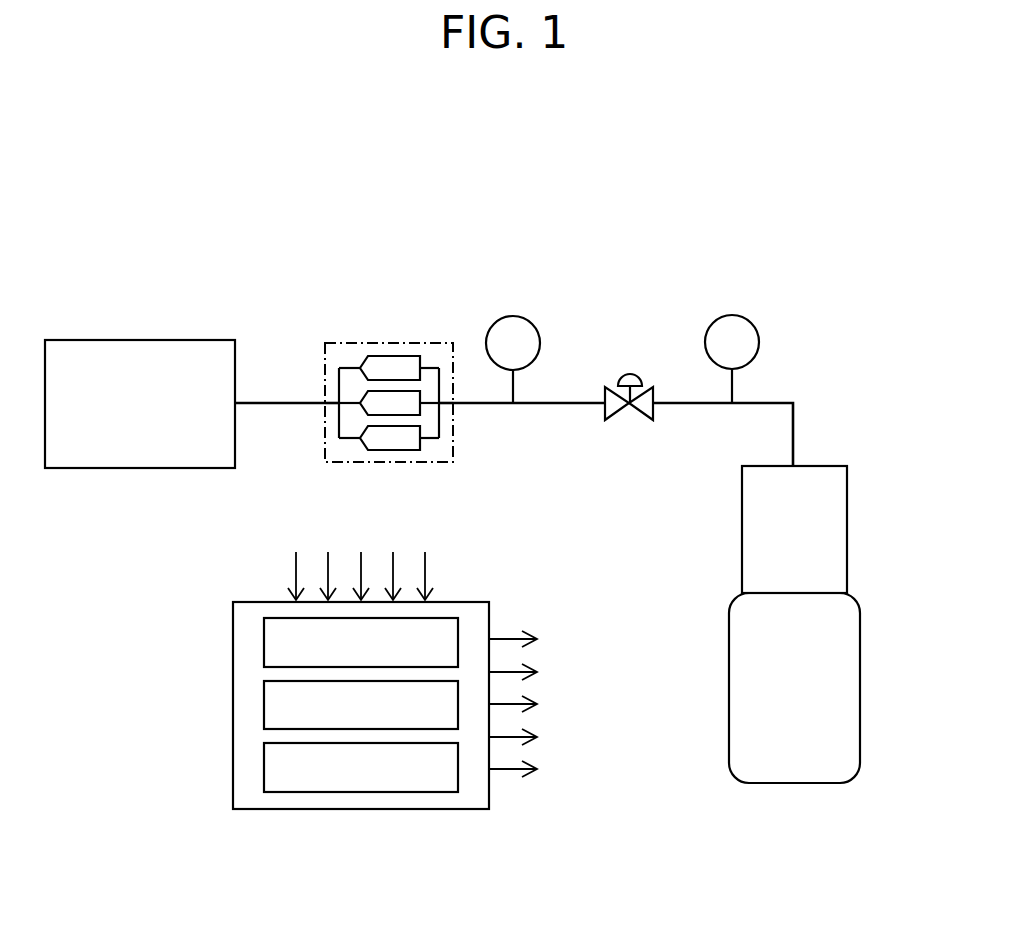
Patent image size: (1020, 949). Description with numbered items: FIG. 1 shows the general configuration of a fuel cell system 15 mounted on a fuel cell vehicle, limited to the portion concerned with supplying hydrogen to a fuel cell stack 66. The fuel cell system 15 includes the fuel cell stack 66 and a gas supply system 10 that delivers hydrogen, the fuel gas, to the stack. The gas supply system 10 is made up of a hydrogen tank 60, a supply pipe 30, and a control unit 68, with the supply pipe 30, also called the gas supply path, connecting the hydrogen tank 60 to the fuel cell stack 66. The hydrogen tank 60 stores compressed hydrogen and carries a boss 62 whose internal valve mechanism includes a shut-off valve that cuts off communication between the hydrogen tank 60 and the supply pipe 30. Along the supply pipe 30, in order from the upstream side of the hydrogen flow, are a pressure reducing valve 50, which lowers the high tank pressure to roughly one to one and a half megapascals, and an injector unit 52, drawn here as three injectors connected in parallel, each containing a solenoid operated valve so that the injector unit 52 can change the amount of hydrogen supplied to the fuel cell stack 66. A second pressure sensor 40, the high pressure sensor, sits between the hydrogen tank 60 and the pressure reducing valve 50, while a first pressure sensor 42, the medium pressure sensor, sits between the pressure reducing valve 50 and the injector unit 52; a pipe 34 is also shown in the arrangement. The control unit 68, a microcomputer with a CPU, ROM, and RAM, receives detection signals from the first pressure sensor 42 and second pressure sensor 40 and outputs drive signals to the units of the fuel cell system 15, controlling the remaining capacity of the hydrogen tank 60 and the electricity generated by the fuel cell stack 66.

The gas supply system 10 is at (800, 308).
The fuel cell system 15 is at (822, 168).
The supply pipe 30 is at (795, 432).
The pipe 34 is at (292, 405).
The second pressure sensor 40 is at (732, 315).
The first pressure sensor 42 is at (513, 316).
The pressure reducing valve 50 is at (628, 374).
The injector unit 52 is at (358, 343).
The hydrogen tank 60 is at (861, 688).
The boss 62 is at (848, 522).
The fuel cell stack 66 is at (138, 340).
The control unit 68 is at (247, 602).